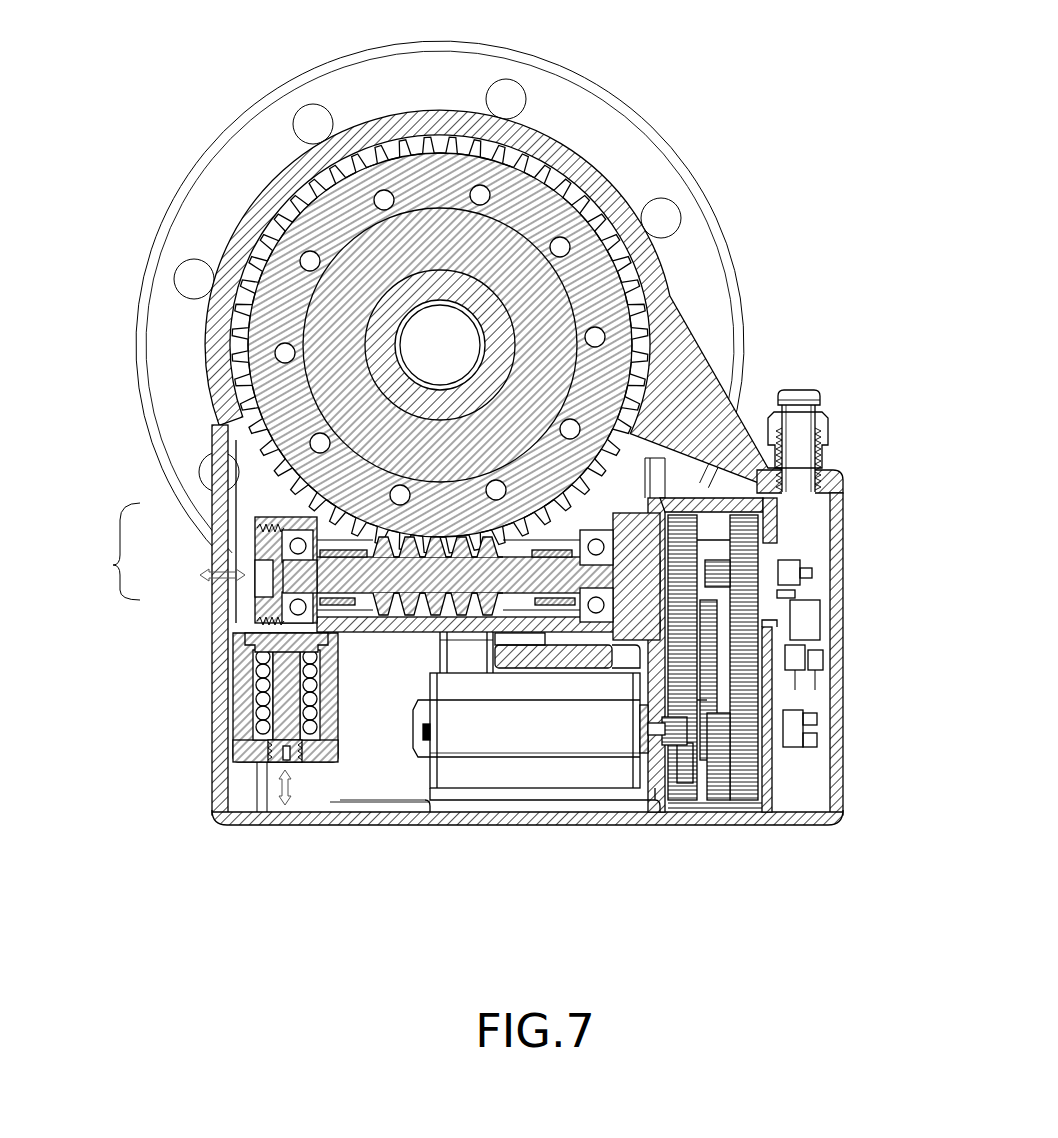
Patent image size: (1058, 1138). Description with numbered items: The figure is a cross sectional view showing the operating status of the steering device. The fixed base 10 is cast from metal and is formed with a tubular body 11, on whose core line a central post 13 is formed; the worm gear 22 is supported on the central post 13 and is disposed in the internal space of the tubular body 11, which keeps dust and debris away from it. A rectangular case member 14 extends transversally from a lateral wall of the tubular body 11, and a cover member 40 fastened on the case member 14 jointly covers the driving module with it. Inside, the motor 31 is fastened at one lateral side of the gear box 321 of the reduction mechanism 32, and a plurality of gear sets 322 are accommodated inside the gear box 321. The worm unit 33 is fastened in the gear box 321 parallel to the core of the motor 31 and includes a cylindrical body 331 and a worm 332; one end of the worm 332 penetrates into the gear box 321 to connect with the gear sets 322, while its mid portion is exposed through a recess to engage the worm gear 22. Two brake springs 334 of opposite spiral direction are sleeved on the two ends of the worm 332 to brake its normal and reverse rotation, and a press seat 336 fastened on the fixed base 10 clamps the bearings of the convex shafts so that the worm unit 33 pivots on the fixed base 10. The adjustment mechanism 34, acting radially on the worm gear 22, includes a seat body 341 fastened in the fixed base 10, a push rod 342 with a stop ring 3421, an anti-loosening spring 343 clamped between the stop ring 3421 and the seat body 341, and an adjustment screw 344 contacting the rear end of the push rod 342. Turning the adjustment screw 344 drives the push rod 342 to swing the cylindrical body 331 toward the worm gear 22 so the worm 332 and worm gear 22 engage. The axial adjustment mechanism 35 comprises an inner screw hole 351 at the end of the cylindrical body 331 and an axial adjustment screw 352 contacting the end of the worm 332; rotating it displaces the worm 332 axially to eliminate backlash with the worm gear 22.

The fixed base 10 is at (700, 337).
The tubular body 11 is at (612, 192).
The central post 13 is at (490, 328).
The case member 14 is at (843, 532).
The worm gear 22 is at (527, 192).
The motor 31 is at (488, 742).
The reduction mechanism 32 is at (805, 693).
The gear box 321 is at (772, 773).
The gear sets 322 is at (745, 780).
The worm unit 33 is at (386, 632).
The cylindrical body 331 is at (362, 625).
The worm 332 is at (300, 578).
The brake springs 334 is at (330, 552).
The press seat 336 is at (573, 655).
The adjustment mechanism 34 is at (318, 765).
The seat body 341 is at (245, 745).
The push rod 342 is at (285, 680).
The stop ring 3421 is at (248, 640).
The anti-loosening spring 343 is at (263, 707).
The adjustment screw 344 is at (278, 762).
The axial adjustment mechanism 35 is at (111, 551).
The inner screw hole 351 is at (262, 528).
The axial adjustment screw 352 is at (256, 574).
The cover member 40 is at (528, 818).